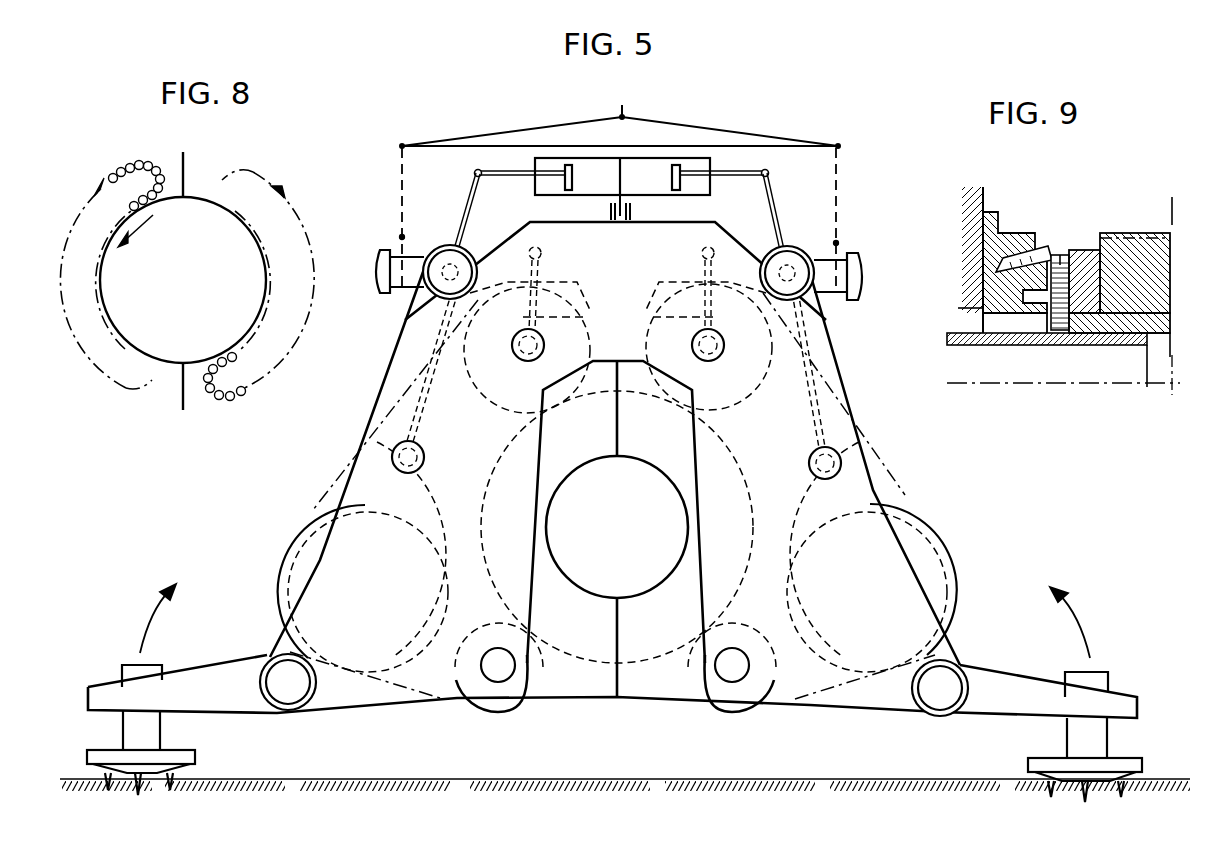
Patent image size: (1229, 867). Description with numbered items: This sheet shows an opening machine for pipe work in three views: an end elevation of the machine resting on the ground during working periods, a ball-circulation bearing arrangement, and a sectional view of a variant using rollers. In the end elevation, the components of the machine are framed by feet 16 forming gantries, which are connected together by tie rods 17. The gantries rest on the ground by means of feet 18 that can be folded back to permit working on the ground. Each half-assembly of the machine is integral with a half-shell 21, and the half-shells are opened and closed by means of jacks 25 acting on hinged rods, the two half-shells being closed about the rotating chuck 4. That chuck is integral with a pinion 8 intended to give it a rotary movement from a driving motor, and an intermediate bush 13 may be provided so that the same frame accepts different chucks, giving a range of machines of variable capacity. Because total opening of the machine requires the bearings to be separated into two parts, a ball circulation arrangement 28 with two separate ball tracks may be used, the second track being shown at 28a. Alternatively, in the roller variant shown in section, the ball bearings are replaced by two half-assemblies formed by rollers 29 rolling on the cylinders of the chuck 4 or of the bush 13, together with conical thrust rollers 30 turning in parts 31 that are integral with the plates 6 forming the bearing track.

In FIG. 9, the chuck 4 is at (1017, 345).
In FIG. 9, the plate 6 is at (972, 241).
In FIG. 9, the pinion 8 is at (1152, 233).
In FIG. 9, the intermediate bush 13 is at (1160, 318).
In FIG. 5, the feet 16 is at (345, 482).
In FIG. 5, the tie rod 17 is at (448, 262).
In FIG. 5, the feet 18 is at (153, 732).
In FIG. 5, the half-shell 21 is at (563, 688).
In FIG. 5, the jack 25 is at (645, 165).
In FIG. 8, the ball circulation arrangement 28 is at (116, 170).
In FIG. 8, the ball chain 28a is at (218, 402).
In FIG. 9, the roller 29 is at (1063, 267).
In FIG. 9, the conical thrust roller 30 is at (1040, 247).
In FIG. 9, the part 31 is at (1002, 223).